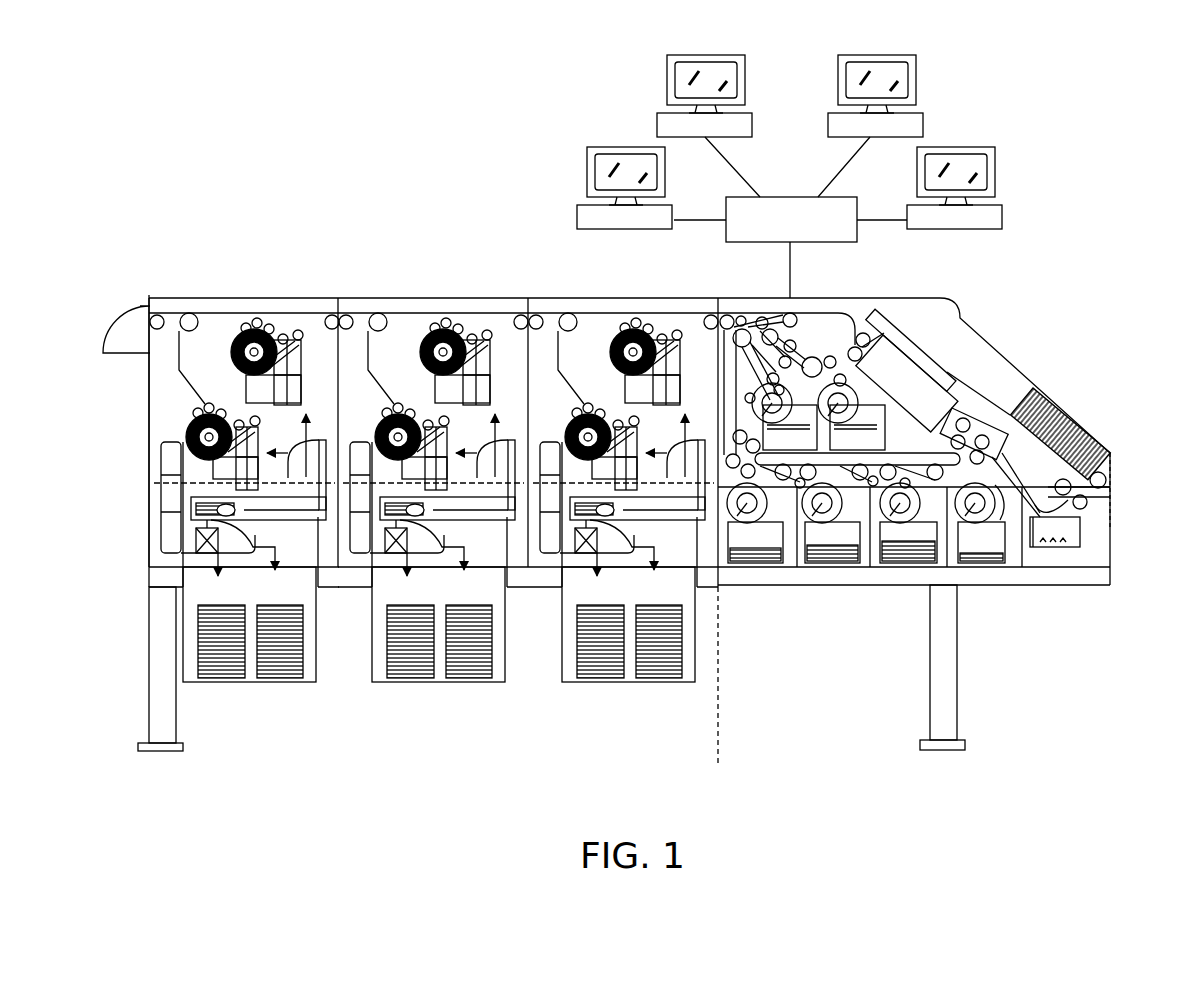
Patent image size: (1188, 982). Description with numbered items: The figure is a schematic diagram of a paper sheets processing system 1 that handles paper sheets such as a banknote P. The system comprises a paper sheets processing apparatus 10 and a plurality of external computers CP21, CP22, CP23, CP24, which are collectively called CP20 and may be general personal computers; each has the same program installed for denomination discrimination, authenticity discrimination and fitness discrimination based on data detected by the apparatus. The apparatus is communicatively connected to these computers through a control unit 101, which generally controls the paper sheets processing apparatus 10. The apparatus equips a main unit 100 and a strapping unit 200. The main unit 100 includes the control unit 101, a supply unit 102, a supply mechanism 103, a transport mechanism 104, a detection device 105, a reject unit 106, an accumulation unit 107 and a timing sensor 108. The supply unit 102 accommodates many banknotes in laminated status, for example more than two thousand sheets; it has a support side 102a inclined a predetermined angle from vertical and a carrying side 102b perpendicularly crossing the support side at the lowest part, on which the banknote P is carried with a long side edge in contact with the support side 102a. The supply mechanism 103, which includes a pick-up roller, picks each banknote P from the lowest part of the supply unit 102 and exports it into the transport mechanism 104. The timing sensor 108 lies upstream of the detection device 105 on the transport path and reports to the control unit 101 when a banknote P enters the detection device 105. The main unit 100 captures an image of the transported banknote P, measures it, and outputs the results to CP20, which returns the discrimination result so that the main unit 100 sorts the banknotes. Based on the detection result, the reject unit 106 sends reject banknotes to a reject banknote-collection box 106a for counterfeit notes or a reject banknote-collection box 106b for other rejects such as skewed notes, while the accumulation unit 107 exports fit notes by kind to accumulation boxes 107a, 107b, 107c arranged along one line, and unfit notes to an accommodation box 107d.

The paper sheets processing system 1 is at (222, 160).
The paper sheets processing apparatus 10 is at (325, 281).
The main unit 100 is at (1110, 762).
The strapping unit 200 is at (718, 762).
The control unit 101 is at (788, 197).
The supply unit 102 is at (995, 325).
The support side 102a is at (948, 322).
The carrying side 102b is at (1106, 478).
The supply mechanism 103 is at (1097, 507).
The transport mechanism 104 is at (1003, 567).
The detection device 105 is at (858, 343).
The reject unit 106 is at (826, 341).
The reject banknote-collection box 106a is at (784, 416).
The reject banknote-collection box 106b is at (851, 416).
The accumulation unit 107 is at (920, 670).
The accumulation box 107a is at (752, 568).
The accumulation box 107b is at (828, 568).
The accumulation box 107c is at (892, 568).
The accommodation box 107d is at (960, 568).
The timing sensor 108 is at (986, 368).
The banknote P is at (1080, 403).
The CP CP20 is at (1017, 53).
The computer CP21 is at (623, 147).
The computer CP22 is at (667, 73).
The computer CP23 is at (917, 73).
The computer CP24 is at (955, 147).